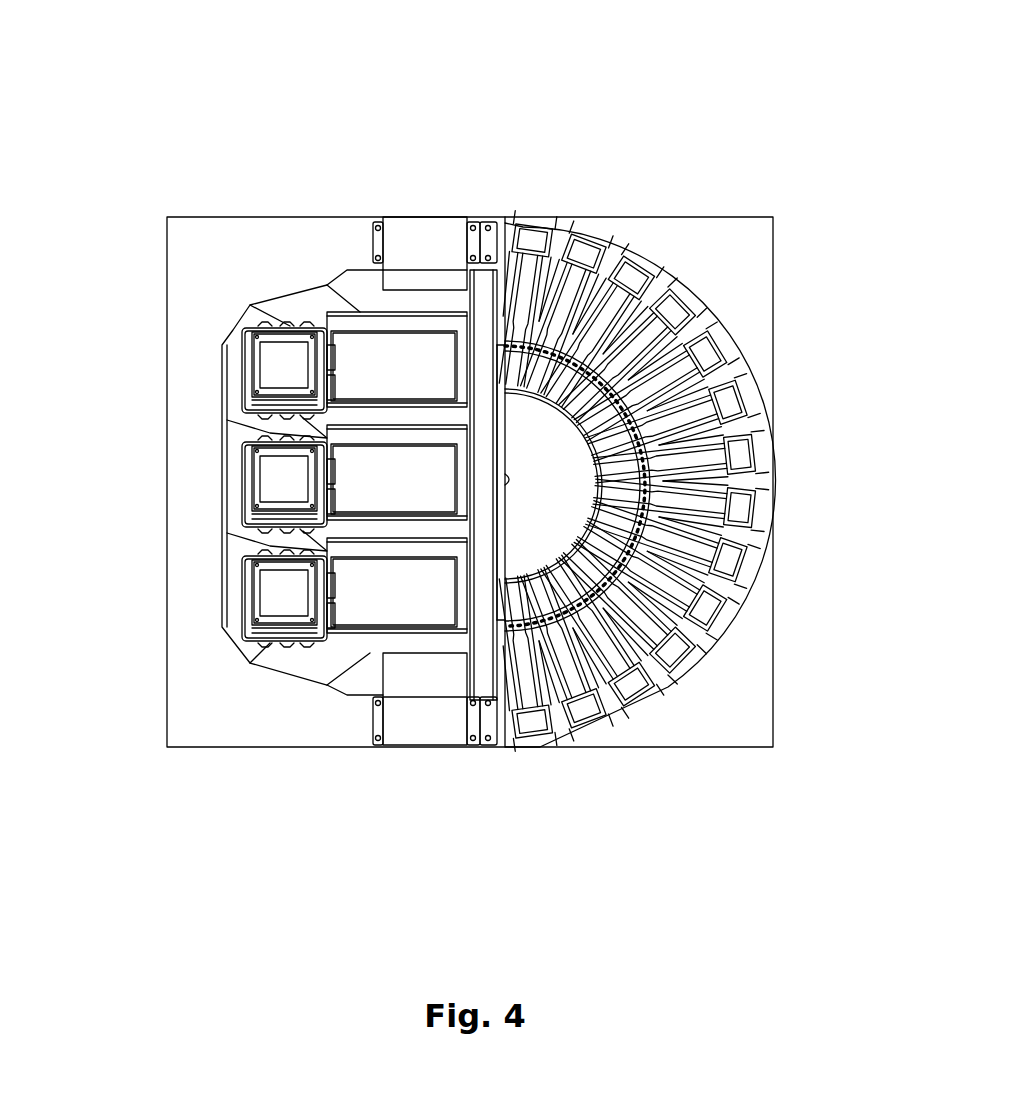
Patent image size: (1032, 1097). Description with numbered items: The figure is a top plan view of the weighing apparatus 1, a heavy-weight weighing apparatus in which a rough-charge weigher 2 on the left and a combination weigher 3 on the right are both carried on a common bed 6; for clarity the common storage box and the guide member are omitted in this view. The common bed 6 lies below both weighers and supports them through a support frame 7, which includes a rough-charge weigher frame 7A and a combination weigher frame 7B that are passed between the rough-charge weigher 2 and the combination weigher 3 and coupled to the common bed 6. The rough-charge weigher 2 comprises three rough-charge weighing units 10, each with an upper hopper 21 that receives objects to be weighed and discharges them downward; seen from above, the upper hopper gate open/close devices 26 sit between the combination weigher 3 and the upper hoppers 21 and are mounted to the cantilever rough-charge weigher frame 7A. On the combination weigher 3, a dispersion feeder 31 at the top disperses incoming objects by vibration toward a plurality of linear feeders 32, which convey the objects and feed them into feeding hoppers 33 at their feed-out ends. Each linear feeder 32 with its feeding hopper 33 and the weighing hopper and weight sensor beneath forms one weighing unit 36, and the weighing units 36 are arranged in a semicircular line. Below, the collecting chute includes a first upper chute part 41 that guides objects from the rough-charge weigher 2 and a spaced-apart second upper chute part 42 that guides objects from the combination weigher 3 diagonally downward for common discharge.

The weighing apparatus 1 is at (474, 454).
The rough-charge weigher 2 is at (261, 420).
The combination weigher 3 is at (695, 480).
The common bed 6 is at (470, 533).
The support frame 7 is at (439, 555).
The rough-charge weigher frame 7A is at (435, 533).
The combination weigher frame 7B is at (484, 560).
The rough-charge weighing unit 10 is at (195, 484).
The upper hopper 21 is at (182, 504).
The upper hopper gate open/close device 26 is at (397, 369).
The dispersion feeder 31 is at (698, 456).
The linear feeder 32 is at (695, 481).
The feeding hopper 33 is at (702, 481).
The weighing unit 36 is at (634, 530).
The first upper chute part 41 is at (219, 502).
The second upper chute part 42 is at (695, 482).